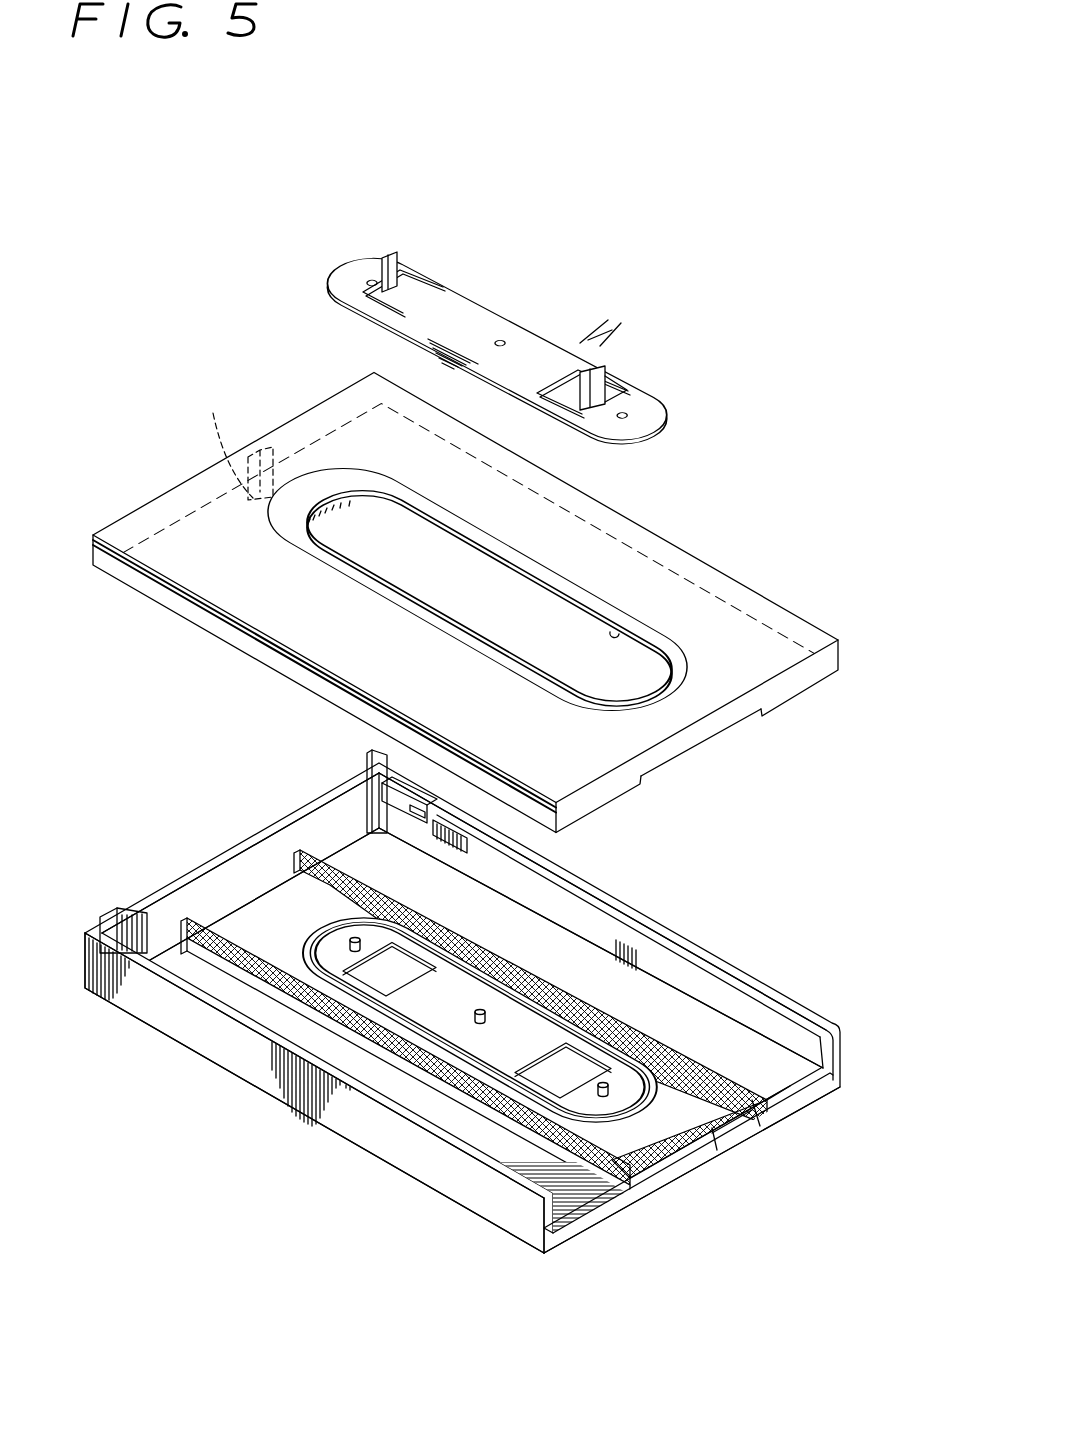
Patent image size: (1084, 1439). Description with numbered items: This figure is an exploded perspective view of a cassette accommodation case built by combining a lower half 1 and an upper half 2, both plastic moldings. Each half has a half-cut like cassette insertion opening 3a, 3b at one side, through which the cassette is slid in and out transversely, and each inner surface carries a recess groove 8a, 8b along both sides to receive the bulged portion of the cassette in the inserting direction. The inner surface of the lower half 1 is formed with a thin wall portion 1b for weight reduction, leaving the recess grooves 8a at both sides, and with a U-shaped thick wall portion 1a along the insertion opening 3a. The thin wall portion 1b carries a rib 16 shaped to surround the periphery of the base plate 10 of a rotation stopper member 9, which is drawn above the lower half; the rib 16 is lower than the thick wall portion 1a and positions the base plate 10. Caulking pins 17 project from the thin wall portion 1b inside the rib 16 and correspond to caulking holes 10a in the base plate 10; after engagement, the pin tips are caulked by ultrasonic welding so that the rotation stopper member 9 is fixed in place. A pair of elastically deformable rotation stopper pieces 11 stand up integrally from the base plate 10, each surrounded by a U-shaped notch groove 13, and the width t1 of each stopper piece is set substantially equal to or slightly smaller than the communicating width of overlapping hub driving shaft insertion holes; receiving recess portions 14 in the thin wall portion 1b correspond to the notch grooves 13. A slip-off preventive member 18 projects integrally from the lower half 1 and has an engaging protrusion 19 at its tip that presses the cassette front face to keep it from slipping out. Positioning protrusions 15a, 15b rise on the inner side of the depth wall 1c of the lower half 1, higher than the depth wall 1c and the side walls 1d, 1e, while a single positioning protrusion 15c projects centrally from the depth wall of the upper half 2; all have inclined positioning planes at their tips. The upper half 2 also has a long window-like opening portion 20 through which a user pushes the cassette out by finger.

The lower half 1 is at (323, 1130).
The thick wall portion 1a is at (720, 1073).
The thin wall portion 1b is at (677, 1107).
The depth wall 1c is at (267, 857).
The side wall 1d is at (590, 893).
The side wall 1e is at (150, 1020).
The upper half 2 is at (243, 660).
The cassette insertion opening 3a is at (757, 1123).
The cassette insertion opening 3b is at (710, 730).
The recess groove 8a is at (792, 1090).
The recess groove 8b is at (793, 676).
The rotation stopper member 9 is at (433, 250).
The base plate 10 is at (500, 340).
The caulking hole 10a is at (366, 275).
The rotation stopper piece 11 is at (393, 253).
The U-shaped notch groove 13 is at (443, 285).
The receiving recess portion 14 is at (380, 973).
The positioning protrusion 15a is at (112, 913).
The positioning protrusion 15b is at (370, 793).
The positioning protrusion 15c is at (229, 439).
The rib 16 is at (563, 1000).
The caulking pin 17 is at (355, 937).
The slip-off preventive member 18 is at (440, 780).
The engaging protrusion 19 is at (413, 817).
The opening portion 20 is at (620, 632).
The width of rotation stopper protrusion t1 is at (604, 322).